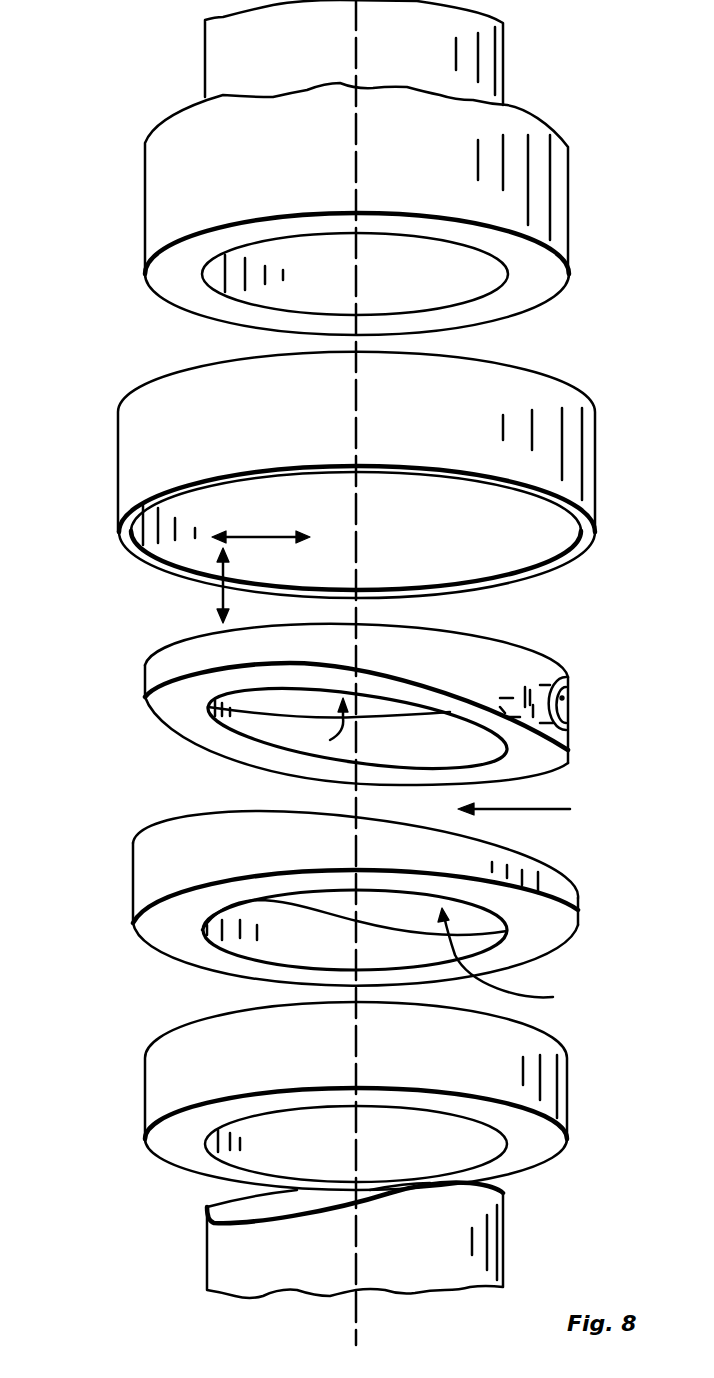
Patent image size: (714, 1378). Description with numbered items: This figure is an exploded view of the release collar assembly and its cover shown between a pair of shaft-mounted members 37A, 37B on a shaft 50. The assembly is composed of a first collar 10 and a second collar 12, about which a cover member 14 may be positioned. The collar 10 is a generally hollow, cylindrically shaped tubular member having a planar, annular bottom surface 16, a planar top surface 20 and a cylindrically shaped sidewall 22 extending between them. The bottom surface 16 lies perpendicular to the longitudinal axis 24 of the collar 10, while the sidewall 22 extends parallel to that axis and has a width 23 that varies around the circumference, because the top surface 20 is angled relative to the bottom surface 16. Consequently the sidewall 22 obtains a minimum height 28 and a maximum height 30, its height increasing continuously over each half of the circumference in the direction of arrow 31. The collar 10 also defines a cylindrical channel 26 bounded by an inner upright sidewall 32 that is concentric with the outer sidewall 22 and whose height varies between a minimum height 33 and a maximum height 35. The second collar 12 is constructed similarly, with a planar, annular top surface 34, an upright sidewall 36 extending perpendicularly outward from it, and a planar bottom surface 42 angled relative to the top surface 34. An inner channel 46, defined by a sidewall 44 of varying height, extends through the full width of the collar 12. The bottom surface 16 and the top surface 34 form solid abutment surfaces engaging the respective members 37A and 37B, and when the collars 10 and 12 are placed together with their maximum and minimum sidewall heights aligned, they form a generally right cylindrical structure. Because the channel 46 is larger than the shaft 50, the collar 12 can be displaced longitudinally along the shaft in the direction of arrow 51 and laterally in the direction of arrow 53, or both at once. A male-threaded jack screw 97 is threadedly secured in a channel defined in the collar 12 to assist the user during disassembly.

The first collar 10 is at (345, 888).
The second collar 12 is at (359, 699).
The cover member 14 is at (215, 441).
The bottom surface 16 is at (183, 951).
The top surface 20 is at (202, 813).
The sidewall 22 is at (133, 870).
The width 23 is at (387, 823).
The longitudinal axis 24 is at (352, 805).
The channel 26 is at (512, 958).
The minimum height 28 is at (579, 916).
The maximum height 30 is at (132, 903).
The arrow 31 is at (533, 810).
The upright sidewall 32 is at (308, 961).
The minimum height 33 is at (568, 900).
The top surface 34 is at (540, 653).
The maximum height 35 is at (357, 617).
The upright sidewall 36 is at (170, 666).
The shaft-mounted member 37A is at (432, 169).
The shaft-mounted member 37B is at (440, 1064).
The bottom surface 42 is at (550, 753).
The sidewall 44 is at (422, 761).
The inner channel 46 is at (326, 725).
The shaft 50 is at (410, 62).
The arrow 51 is at (227, 568).
The arrow 53 is at (272, 537).
The jack screw 97 is at (523, 693).